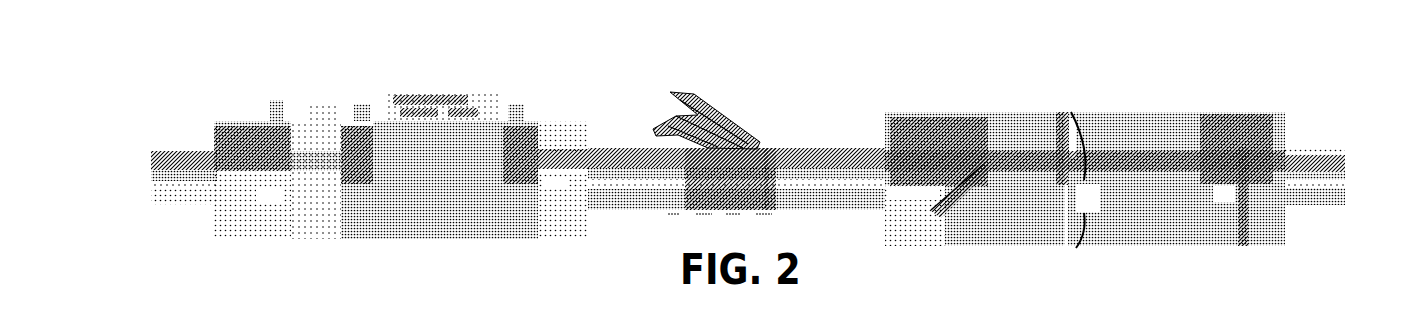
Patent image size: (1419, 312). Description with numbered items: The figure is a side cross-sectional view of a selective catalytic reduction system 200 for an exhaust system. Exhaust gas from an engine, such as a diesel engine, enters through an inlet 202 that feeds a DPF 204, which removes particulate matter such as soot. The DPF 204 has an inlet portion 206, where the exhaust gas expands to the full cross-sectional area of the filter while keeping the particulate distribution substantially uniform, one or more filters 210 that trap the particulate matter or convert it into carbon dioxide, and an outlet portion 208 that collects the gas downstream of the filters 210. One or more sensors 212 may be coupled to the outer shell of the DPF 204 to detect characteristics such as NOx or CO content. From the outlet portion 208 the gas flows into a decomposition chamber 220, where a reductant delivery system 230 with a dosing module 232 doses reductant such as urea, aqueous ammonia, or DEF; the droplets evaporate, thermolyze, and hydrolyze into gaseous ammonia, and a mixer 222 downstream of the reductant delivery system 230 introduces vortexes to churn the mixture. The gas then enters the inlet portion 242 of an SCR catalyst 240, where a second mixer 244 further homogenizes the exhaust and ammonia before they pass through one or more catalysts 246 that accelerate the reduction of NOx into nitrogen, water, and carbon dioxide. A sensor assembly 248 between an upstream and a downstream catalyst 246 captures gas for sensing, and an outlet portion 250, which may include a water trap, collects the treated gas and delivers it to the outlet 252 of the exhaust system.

The selective catalytic reduction system 200 is at (1208, 66).
The inlet 202 is at (147, 142).
The DPF 204 is at (427, 90).
The inlet portion 206 is at (214, 113).
The outlet portion 208 is at (557, 122).
The filters 210 is at (306, 221).
The sensors 212 is at (264, 100).
The decomposition chamber 220 is at (610, 203).
The mixer 222 is at (763, 140).
The reductant delivery system 230 is at (727, 112).
The dosing module 232 is at (674, 84).
The SCR catalyst 240 is at (947, 100).
The inlet portion 242 is at (903, 233).
The second mixer 244 is at (937, 202).
The catalysts 246 is at (1015, 113).
The sensor assembly 248 is at (1063, 207).
The outlet portion 250 is at (1247, 233).
The outlet 252 is at (1323, 143).